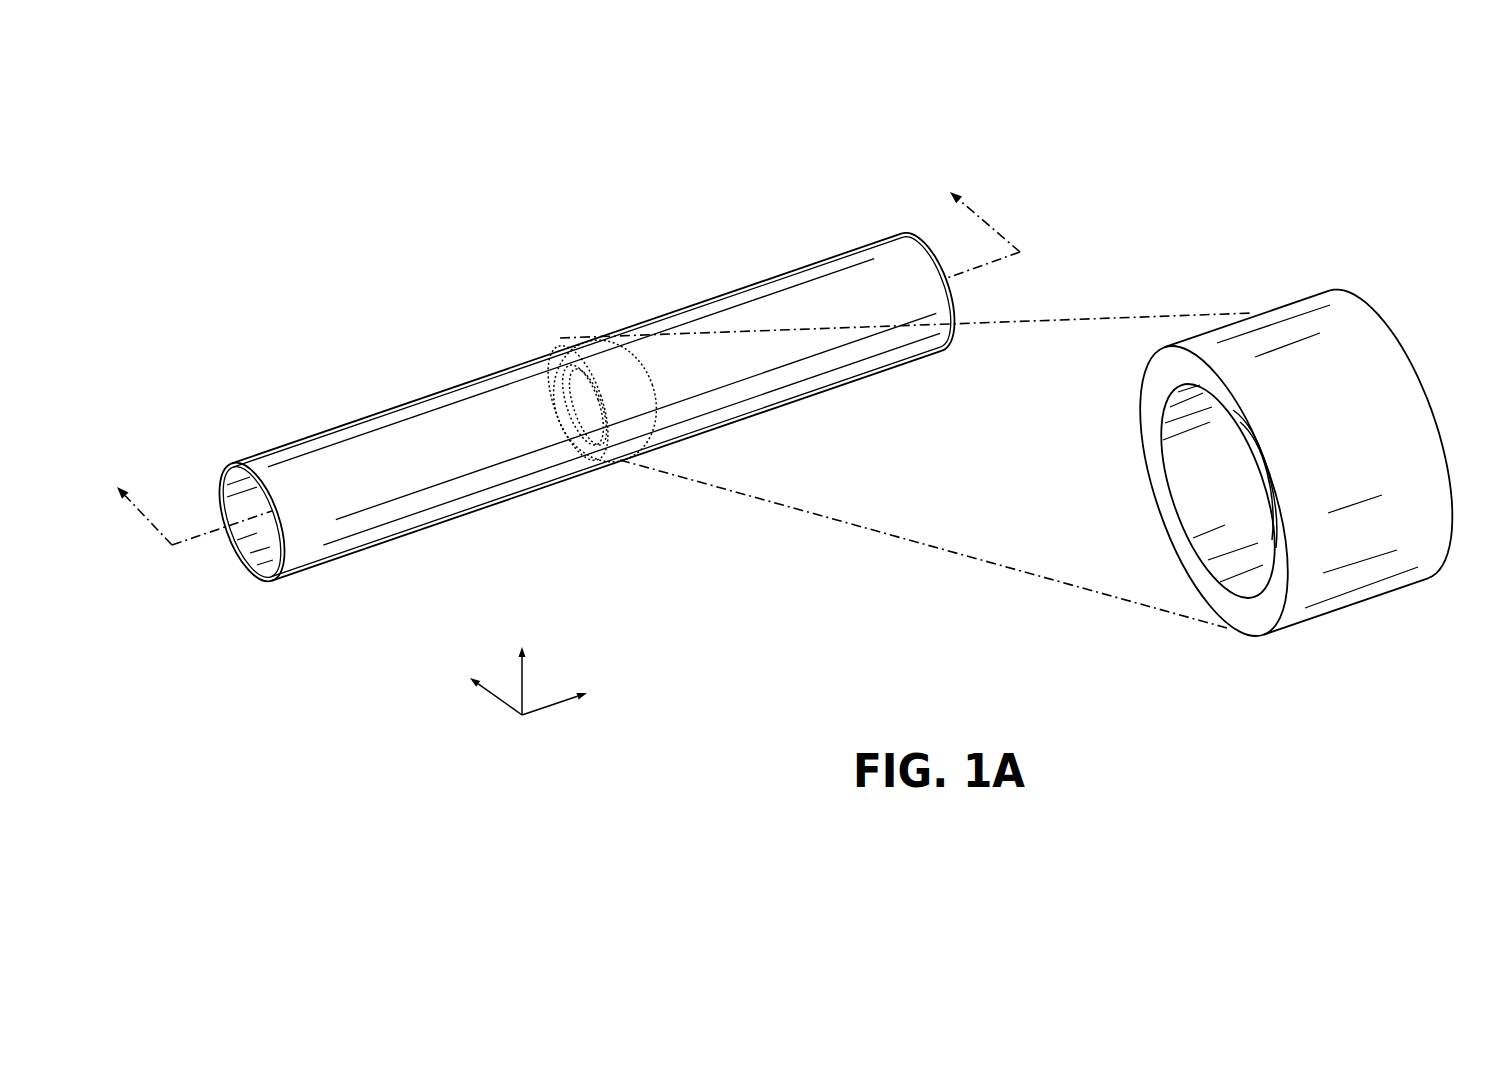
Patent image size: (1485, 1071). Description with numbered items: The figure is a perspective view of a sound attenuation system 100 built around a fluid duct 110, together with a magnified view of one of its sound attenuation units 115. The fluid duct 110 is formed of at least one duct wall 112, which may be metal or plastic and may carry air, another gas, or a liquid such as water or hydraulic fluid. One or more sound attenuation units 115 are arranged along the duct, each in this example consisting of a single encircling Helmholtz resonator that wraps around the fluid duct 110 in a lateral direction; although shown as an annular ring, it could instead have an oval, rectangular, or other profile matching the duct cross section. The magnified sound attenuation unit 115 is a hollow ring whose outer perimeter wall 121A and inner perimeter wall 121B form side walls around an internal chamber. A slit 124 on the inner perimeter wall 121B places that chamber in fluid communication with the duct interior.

The sound attenuation system 100 is at (354, 197).
The fluid duct 110 is at (296, 430).
The duct wall 112 is at (453, 433).
The sound attenuation unit 115 is at (595, 350).
The outer perimeter wall 121A is at (1367, 525).
The inner perimeter wall 121B is at (1243, 580).
The slit 124 is at (1237, 478).